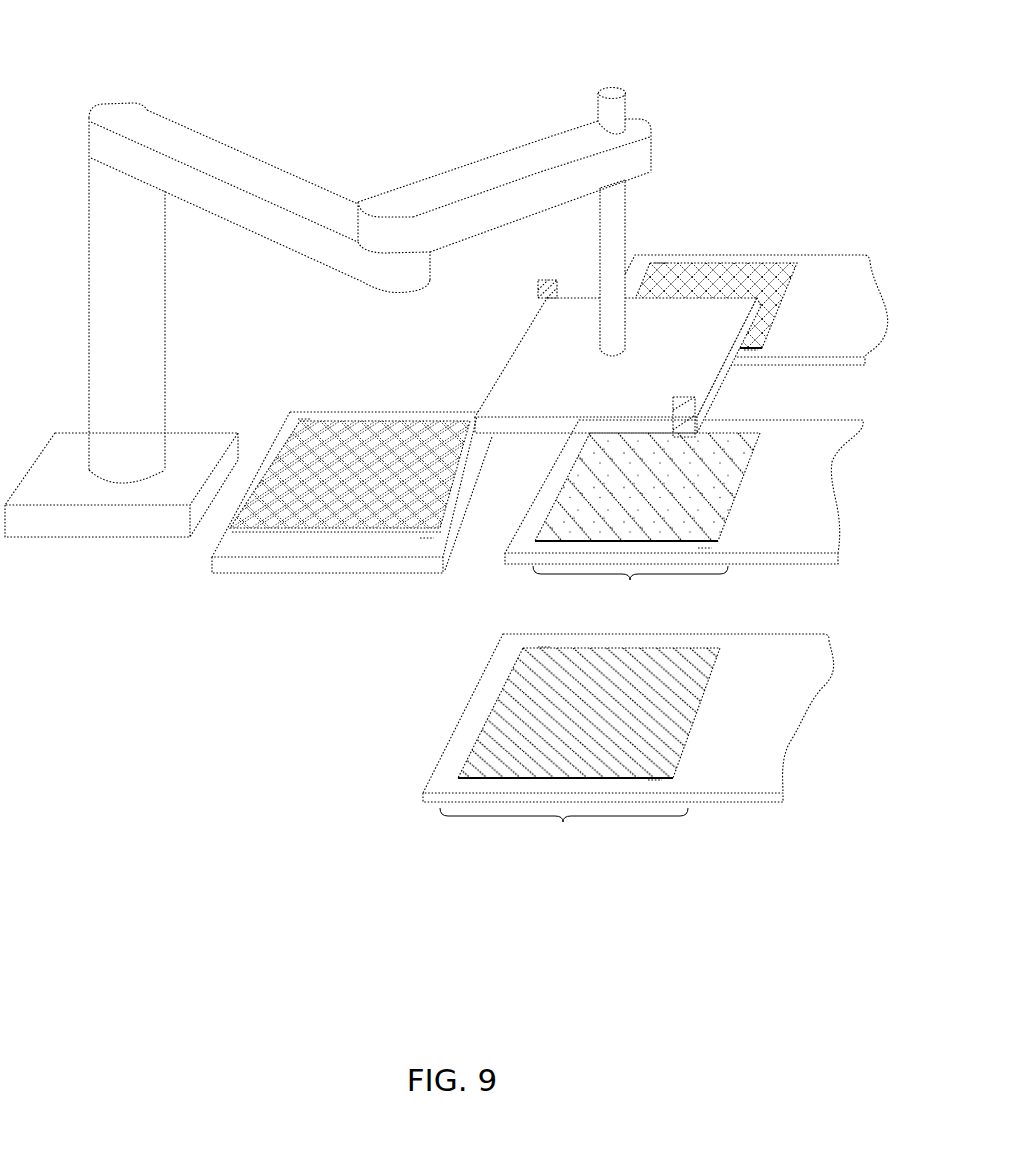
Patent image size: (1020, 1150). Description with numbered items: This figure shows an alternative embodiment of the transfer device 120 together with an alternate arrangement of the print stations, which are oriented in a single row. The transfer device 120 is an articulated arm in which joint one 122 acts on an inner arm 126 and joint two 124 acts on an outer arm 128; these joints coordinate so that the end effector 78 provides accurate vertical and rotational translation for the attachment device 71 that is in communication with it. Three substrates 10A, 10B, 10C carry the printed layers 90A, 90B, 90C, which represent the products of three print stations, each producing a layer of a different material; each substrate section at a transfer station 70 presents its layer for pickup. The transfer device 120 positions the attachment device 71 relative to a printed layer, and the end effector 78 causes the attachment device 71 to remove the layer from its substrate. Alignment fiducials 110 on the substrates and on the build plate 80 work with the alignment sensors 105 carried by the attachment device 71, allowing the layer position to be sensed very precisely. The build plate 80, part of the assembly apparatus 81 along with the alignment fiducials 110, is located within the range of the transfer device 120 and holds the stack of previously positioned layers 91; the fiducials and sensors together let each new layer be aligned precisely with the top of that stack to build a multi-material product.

The transfer device 120 is at (328, 276).
The joint one 122 is at (123, 117).
The joint two 124 is at (392, 202).
The inner arm 126 is at (240, 167).
The outer arm 128 is at (568, 145).
The end effector 78 is at (615, 290).
The attachment device 71 is at (523, 357).
The alignment sensor 105 is at (540, 292).
The alignment fiducials 110 is at (662, 260).
The assembly apparatus 81 is at (337, 486).
The build plate 80 is at (250, 563).
The previously positioned layers 91 is at (372, 518).
The substrate 10A is at (822, 280).
The substrate 10B is at (815, 447).
The substrate 10C is at (788, 707).
The printed layer 90A is at (743, 273).
The printed layer 90B is at (723, 452).
The printed layer 90C is at (680, 662).
The transfer station 70 is at (584, 709).